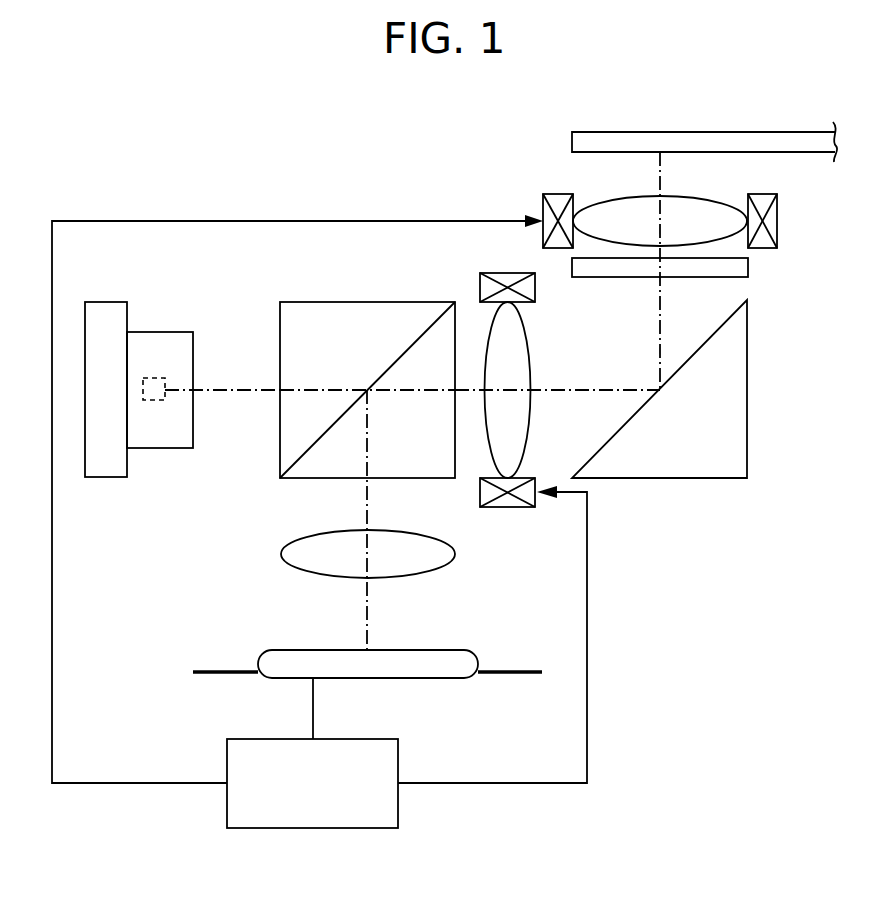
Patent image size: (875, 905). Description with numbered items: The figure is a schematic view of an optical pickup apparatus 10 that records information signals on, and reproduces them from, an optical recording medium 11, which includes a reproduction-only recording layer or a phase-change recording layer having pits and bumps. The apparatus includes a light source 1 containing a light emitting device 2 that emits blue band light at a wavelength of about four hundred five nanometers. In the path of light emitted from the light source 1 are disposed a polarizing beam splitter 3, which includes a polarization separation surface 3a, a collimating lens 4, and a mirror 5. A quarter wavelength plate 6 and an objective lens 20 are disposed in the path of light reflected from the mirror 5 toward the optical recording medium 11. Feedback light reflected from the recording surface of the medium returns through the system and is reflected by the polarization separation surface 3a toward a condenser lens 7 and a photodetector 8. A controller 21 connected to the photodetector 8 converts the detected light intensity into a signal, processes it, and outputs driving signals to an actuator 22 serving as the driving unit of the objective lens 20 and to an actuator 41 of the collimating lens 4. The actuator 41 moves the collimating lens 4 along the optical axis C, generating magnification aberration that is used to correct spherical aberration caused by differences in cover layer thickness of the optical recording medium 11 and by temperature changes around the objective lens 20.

The optical pickup apparatus 10 is at (236, 118).
The light source 1 is at (107, 302).
The light emitting device 2 is at (152, 378).
The polarizing beam splitter 3 is at (337, 302).
The polarization separation surface 3a is at (414, 338).
The collimating lens 4 is at (526, 362).
The actuator 41 is at (508, 508).
The mirror 5 is at (749, 368).
The quarter wavelength plate 6 is at (749, 265).
The objective lens 20 is at (688, 204).
The actuator 22 is at (778, 217).
The optical recording medium 11 is at (740, 140).
The condenser lens 7 is at (306, 565).
The photodetector 8 is at (452, 660).
The controller 21 is at (346, 825).
The optical axis C is at (226, 401).